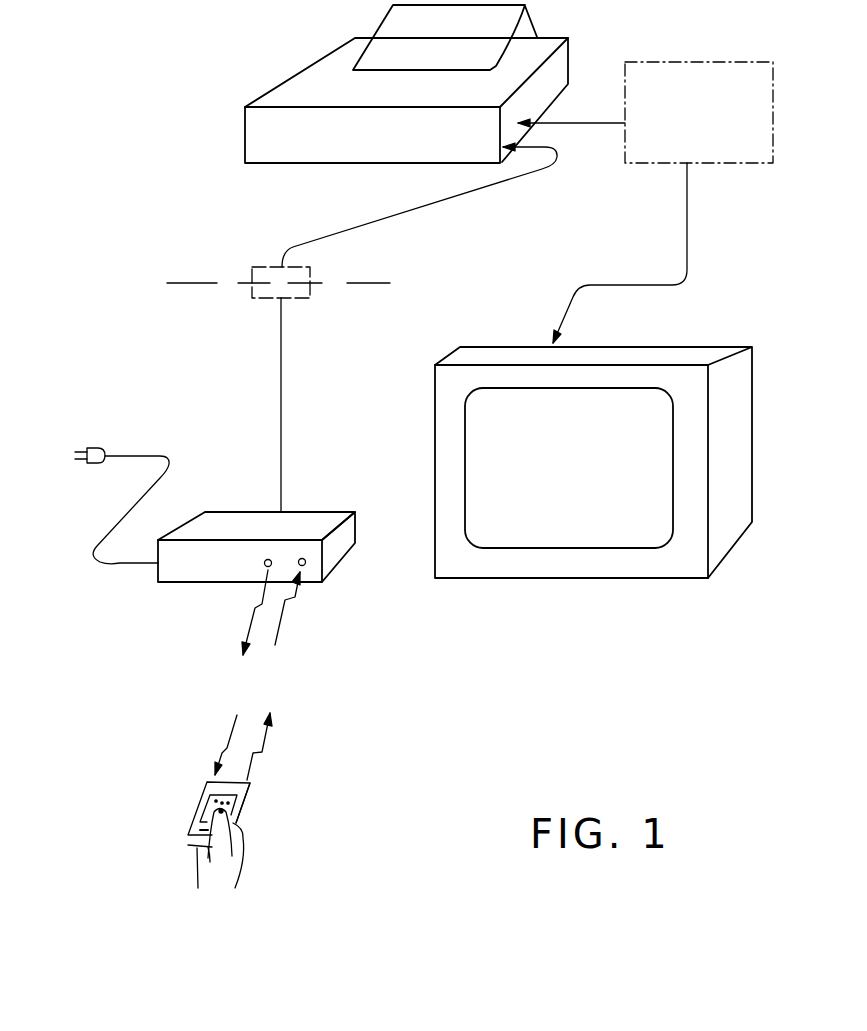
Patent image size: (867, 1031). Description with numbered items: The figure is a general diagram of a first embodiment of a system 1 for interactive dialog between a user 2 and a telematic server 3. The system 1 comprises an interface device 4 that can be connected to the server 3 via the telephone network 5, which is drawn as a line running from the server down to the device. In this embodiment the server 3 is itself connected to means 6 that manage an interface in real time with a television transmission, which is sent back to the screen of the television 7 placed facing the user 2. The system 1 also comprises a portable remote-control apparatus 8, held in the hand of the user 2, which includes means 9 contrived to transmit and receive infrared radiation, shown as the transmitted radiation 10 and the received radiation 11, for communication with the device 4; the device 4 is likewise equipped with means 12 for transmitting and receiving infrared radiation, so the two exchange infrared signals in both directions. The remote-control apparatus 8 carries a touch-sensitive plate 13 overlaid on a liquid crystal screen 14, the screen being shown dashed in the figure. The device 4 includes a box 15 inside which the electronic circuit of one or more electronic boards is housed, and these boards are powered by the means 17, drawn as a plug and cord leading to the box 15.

The system 1 is at (143, 628).
The user 2 is at (195, 878).
The telematic server 3 is at (297, 85).
The interface device 4 is at (342, 550).
The telephone network 5 is at (470, 188).
The means managing an interface in real time 6 is at (710, 60).
The television 7 is at (604, 578).
The portable remote-control apparatus 8 is at (243, 818).
The means for transmitting and receiving infrared radiation 9 is at (253, 787).
The transmitted infrared radiation 10 is at (285, 600).
The received infrared radiation 11 is at (253, 605).
The means for transmitting and receiving infrared radiation 12 is at (247, 562).
The touch-sensitive plate 13 is at (190, 823).
The liquid crystal screen 14 is at (192, 802).
The box 15 is at (345, 500).
The power supply means 17 is at (95, 448).